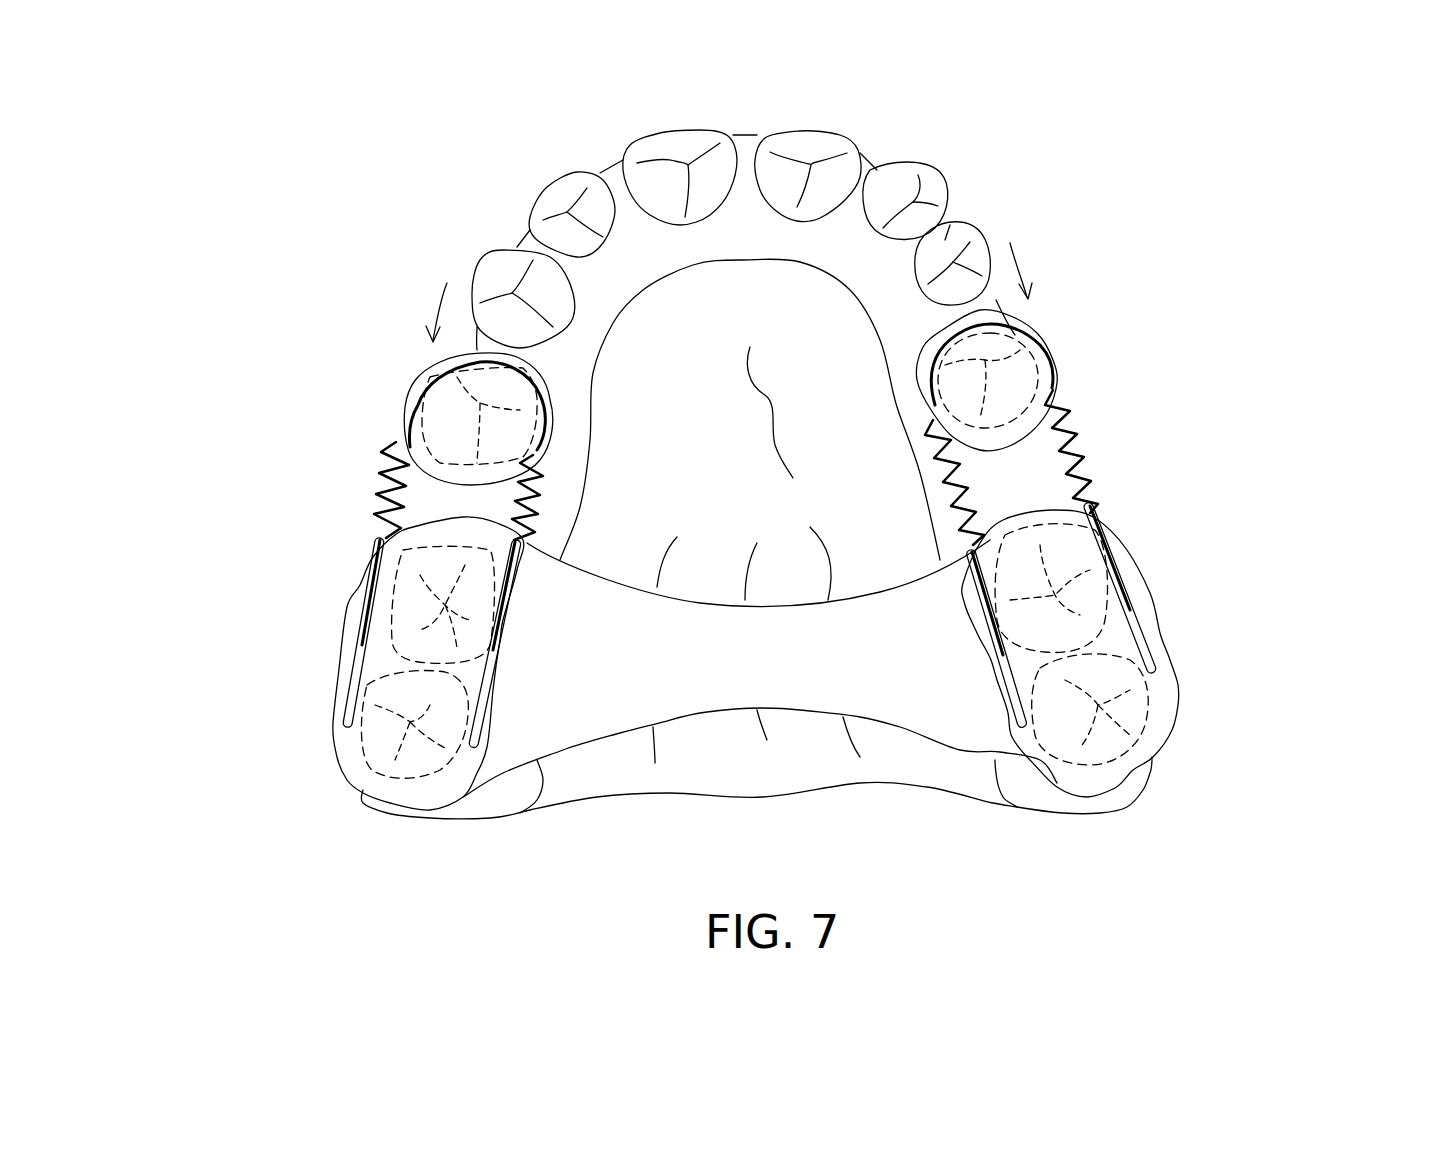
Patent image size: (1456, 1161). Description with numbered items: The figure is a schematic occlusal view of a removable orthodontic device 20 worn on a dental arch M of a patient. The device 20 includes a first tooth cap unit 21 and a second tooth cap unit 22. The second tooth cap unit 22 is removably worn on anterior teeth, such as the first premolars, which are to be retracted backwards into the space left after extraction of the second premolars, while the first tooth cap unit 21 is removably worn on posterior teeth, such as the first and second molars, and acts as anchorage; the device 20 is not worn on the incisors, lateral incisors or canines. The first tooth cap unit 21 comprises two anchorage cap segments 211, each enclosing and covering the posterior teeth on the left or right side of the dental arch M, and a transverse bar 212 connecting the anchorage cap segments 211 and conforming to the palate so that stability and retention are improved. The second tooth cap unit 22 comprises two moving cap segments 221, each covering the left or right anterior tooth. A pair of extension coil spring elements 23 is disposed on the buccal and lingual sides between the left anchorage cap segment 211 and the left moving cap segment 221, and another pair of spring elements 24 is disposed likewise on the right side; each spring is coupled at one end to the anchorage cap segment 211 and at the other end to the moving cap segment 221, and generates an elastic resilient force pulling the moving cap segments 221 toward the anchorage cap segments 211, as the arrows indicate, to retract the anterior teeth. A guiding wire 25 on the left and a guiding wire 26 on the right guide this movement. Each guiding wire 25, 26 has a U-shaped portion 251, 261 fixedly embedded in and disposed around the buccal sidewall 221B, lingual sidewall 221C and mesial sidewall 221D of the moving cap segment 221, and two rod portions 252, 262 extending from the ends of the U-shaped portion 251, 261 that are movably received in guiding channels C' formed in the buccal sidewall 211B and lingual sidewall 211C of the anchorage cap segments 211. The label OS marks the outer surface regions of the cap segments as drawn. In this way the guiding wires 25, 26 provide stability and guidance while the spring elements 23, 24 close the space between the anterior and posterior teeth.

The removable orthodontic device 20 is at (274, 130).
The first tooth cap unit 21 is at (208, 642).
The second tooth cap unit 22 is at (250, 375).
The spring element 23 is at (375, 492).
The spring element 24 is at (938, 484).
The guiding wire 25 is at (138, 407).
The guiding wire 26 is at (1383, 346).
The anchorage cap segment 211 is at (335, 680).
The transverse bar 212 is at (703, 672).
The moving cap segment 221 is at (400, 396).
The U-shaped portion 251 is at (550, 408).
The rod portion 252 is at (367, 587).
The U-shaped portion 261 is at (1052, 351).
The rod portion 262 is at (993, 650).
The buccal sidewall 211B is at (357, 633).
The lingual sidewall 211C is at (520, 588).
The buccal sidewall 221B is at (403, 413).
The lingual sidewall 221C is at (545, 450).
The mesial sidewall 221D is at (535, 362).
The outer surface OS is at (410, 428).
The guiding channel C' is at (743, 624).
The dental arch M is at (777, 797).